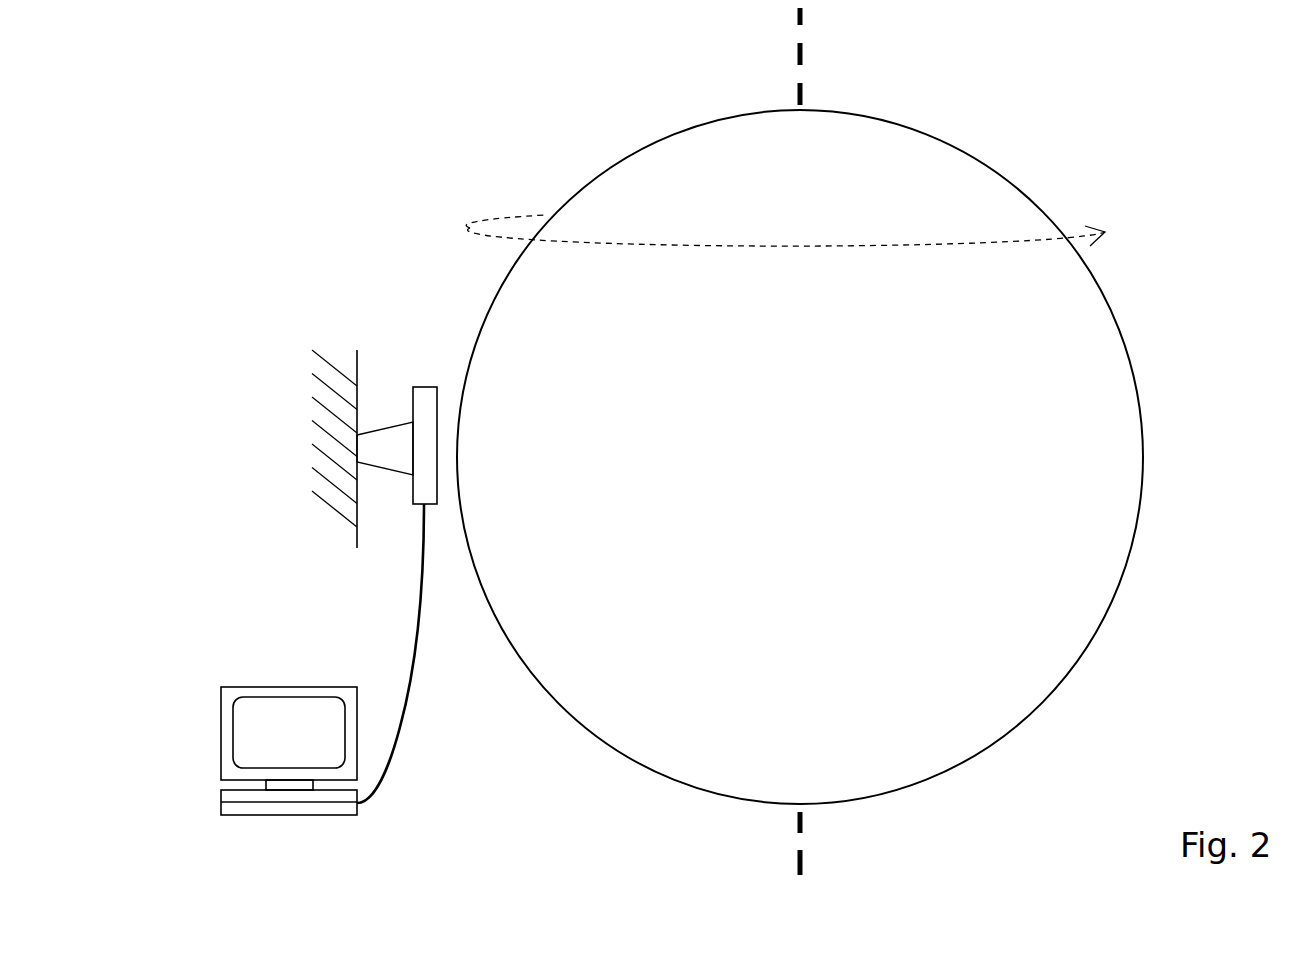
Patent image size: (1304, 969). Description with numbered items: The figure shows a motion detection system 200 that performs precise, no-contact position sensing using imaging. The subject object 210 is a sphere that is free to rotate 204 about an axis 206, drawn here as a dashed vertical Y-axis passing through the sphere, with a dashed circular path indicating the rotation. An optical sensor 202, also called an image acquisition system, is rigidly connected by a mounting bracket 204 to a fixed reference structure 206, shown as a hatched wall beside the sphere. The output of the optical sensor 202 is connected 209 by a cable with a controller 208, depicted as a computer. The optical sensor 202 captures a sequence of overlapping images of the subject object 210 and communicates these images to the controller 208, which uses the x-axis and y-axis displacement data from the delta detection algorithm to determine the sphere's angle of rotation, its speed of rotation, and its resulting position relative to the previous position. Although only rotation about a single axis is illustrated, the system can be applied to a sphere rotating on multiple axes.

The motion detection system 200 is at (358, 235).
The optical sensor 202 is at (425, 387).
The mounting bracket 204 is at (386, 425).
The fixed reference structure 206 is at (320, 500).
The controller 208 is at (288, 815).
The connection 209 is at (383, 780).
The subject object 210 is at (777, 201).